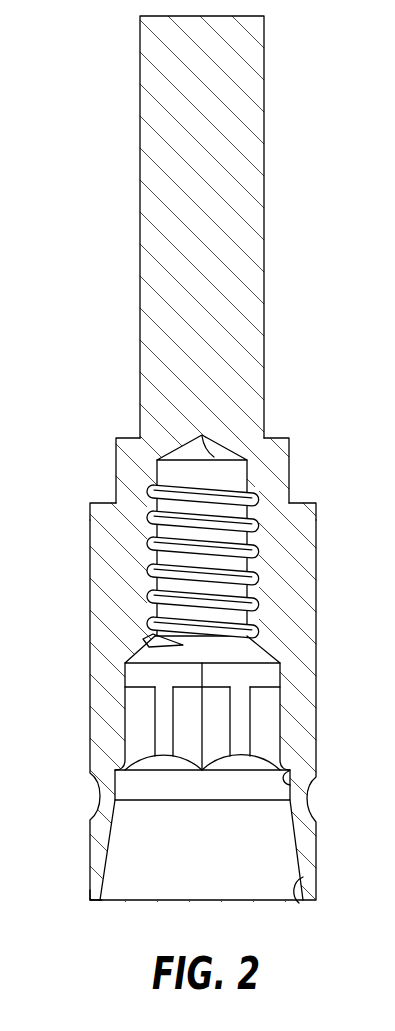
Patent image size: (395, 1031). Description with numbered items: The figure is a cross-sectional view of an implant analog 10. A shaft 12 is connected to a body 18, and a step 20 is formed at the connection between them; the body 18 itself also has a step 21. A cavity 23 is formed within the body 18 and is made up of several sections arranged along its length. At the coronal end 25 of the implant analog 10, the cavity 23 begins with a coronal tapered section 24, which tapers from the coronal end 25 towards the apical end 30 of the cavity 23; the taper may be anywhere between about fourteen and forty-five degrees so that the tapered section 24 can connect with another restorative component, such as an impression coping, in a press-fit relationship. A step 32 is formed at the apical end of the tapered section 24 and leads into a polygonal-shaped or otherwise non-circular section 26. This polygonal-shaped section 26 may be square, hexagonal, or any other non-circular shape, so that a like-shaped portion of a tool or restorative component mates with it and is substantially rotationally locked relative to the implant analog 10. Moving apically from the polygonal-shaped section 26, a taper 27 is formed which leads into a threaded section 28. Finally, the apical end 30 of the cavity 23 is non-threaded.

The implant analog 10 is at (88, 56).
The shaft 12 is at (248, 162).
The body 18 is at (105, 598).
The step 20 is at (135, 438).
The step 21 is at (103, 503).
The cavity 23 is at (207, 893).
The tapered section 24 is at (300, 903).
The coronal end 25 is at (95, 903).
The polygonal-shaped section 26 is at (267, 717).
The taper 27 is at (130, 667).
The threaded section 28 is at (250, 563).
The apical end 30 is at (248, 460).
The step 32 is at (288, 780).